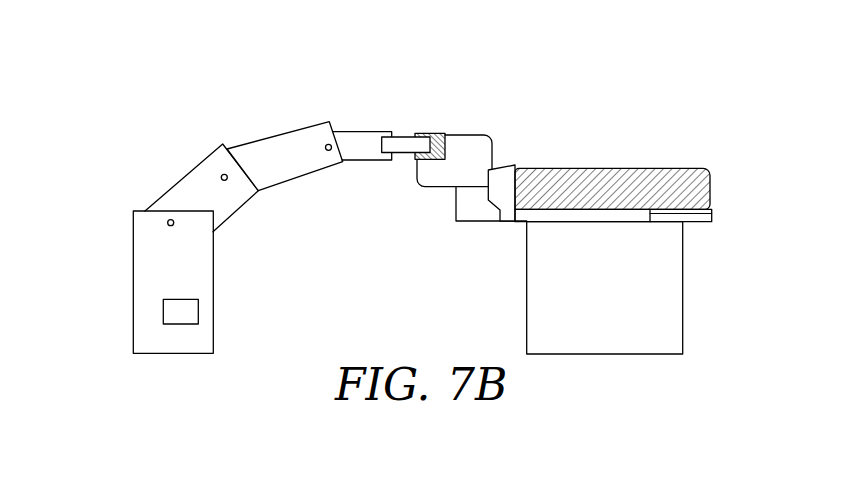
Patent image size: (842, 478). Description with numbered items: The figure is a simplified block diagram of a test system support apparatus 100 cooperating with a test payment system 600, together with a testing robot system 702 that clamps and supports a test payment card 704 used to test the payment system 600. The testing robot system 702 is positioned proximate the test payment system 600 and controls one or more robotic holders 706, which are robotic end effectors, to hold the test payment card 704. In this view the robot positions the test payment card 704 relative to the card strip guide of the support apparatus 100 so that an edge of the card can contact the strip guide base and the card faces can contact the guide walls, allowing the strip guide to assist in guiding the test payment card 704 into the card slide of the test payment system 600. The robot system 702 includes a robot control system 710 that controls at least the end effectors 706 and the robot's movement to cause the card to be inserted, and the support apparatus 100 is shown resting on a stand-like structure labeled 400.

The testing robot system 702 is at (113, 279).
The test payment card 704 is at (475, 142).
The robotic holder 706 is at (408, 148).
The robot control system 710 is at (192, 317).
The test system support apparatus 100 is at (478, 213).
The support stand 400 is at (606, 206).
The test payment system 600 is at (670, 172).